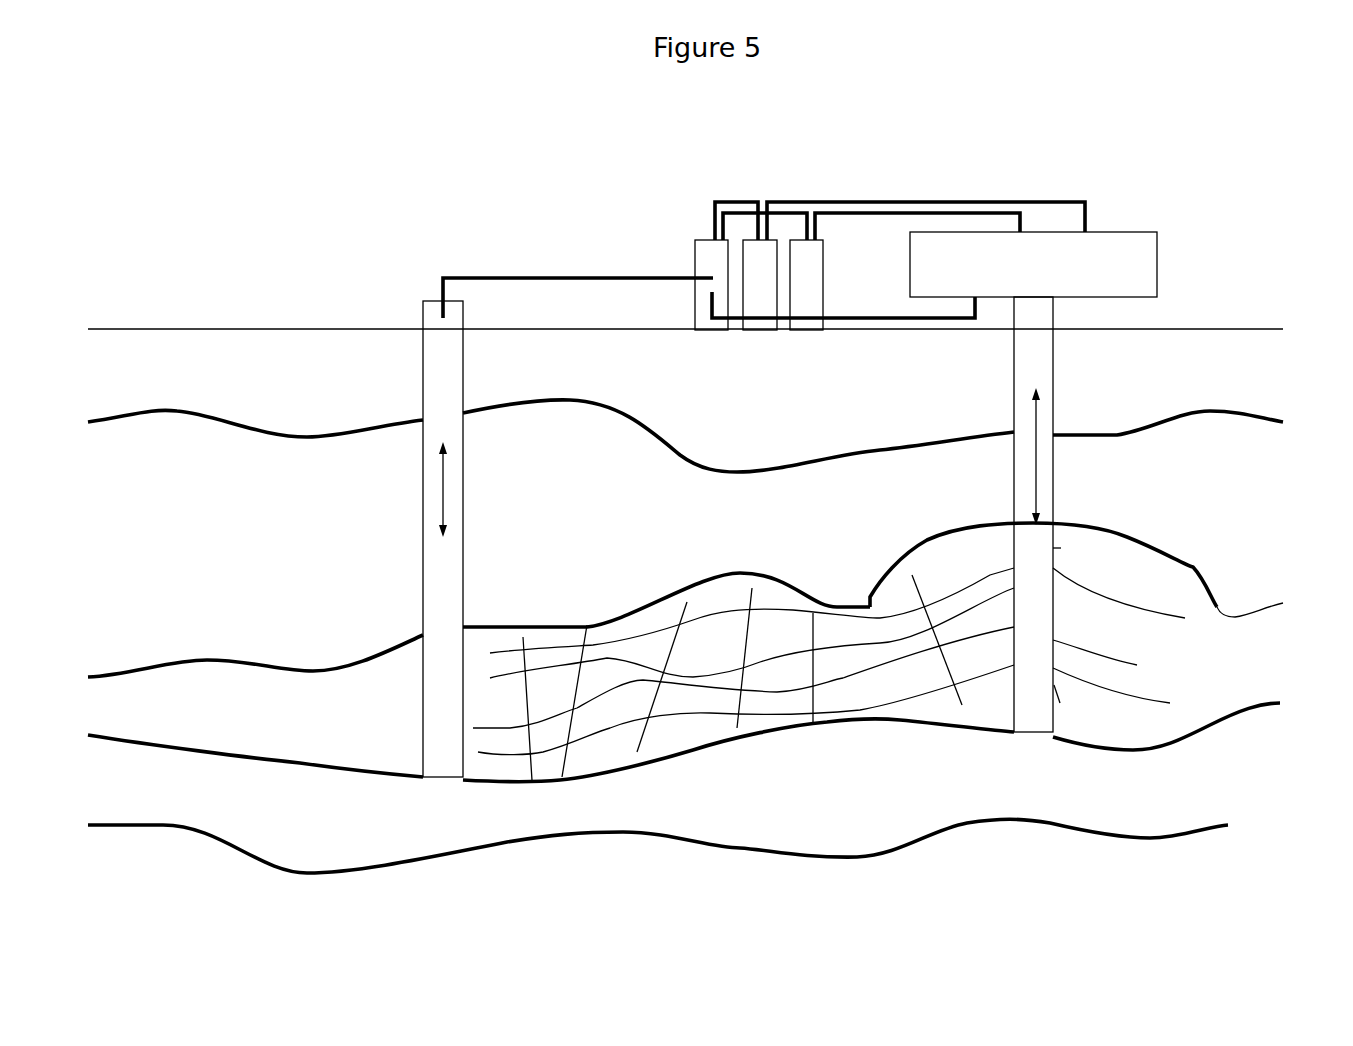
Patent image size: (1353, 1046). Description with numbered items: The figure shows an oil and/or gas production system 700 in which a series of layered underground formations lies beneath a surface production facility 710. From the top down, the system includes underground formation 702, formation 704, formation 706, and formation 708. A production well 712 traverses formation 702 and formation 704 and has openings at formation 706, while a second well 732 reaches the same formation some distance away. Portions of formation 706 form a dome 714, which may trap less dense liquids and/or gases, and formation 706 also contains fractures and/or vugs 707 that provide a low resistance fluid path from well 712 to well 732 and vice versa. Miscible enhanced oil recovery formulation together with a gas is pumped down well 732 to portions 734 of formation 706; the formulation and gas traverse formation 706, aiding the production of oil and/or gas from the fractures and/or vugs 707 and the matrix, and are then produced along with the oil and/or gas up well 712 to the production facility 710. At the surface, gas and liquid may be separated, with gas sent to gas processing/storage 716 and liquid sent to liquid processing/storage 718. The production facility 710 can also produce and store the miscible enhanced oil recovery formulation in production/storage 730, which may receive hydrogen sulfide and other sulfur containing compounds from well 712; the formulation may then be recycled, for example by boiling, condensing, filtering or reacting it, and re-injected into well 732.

The system 700 is at (436, 178).
The underground formation 702 is at (859, 404).
The formation 704 is at (1154, 486).
The formation 706 is at (1250, 667).
The fractures and/or vugs 707 is at (782, 692).
The formation 708 is at (1210, 786).
The production facility 710 is at (1050, 274).
The well 712 is at (1055, 362).
The dome 714 is at (992, 563).
The gas processing/storage 716 is at (803, 265).
The liquid processing/storage 718 is at (763, 265).
The miscible enhanced oil recovery formulation production/storage 730 is at (708, 255).
The well 732 is at (443, 372).
The portions 734 is at (490, 702).